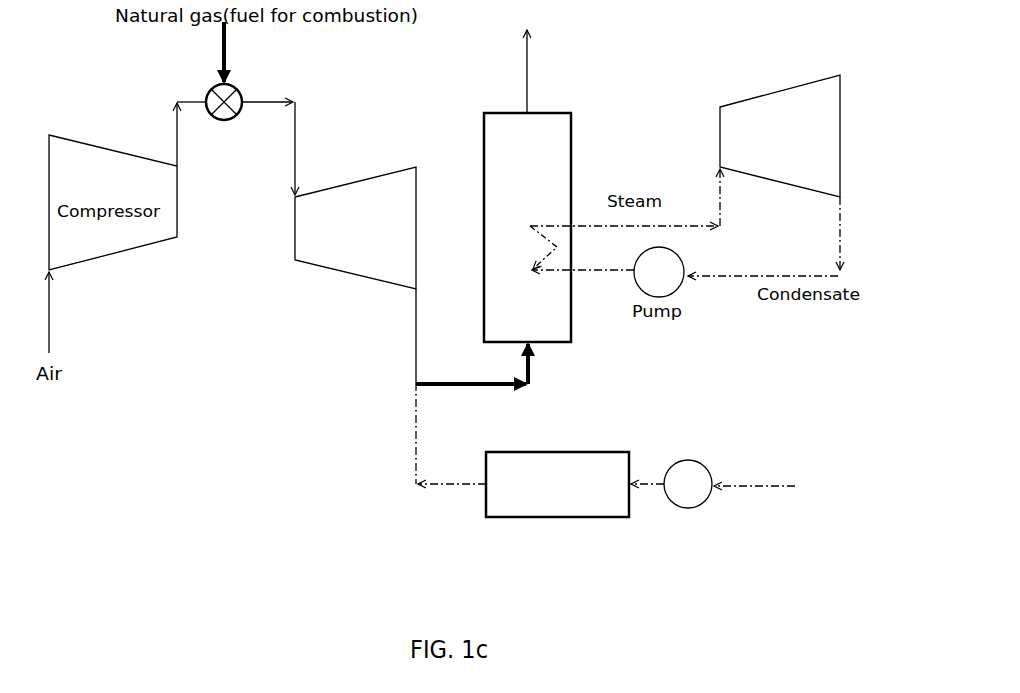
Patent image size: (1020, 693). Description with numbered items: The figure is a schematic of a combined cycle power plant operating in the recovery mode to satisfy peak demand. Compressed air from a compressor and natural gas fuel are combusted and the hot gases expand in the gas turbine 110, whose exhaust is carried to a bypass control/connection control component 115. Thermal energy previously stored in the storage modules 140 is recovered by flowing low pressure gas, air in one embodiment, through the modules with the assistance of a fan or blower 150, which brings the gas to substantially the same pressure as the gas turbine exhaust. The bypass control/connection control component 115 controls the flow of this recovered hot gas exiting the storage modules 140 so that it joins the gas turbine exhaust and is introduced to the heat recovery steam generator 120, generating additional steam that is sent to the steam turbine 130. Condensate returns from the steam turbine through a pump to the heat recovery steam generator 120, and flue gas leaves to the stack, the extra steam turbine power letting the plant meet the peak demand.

The gas turbine 110 is at (382, 161).
The bypass control/connection control component 115 is at (414, 383).
The heat recovery steam generator 120 is at (592, 351).
The steam turbine 130 is at (740, 92).
The storage modules 140 is at (466, 518).
The fan or blower 150 is at (732, 446).